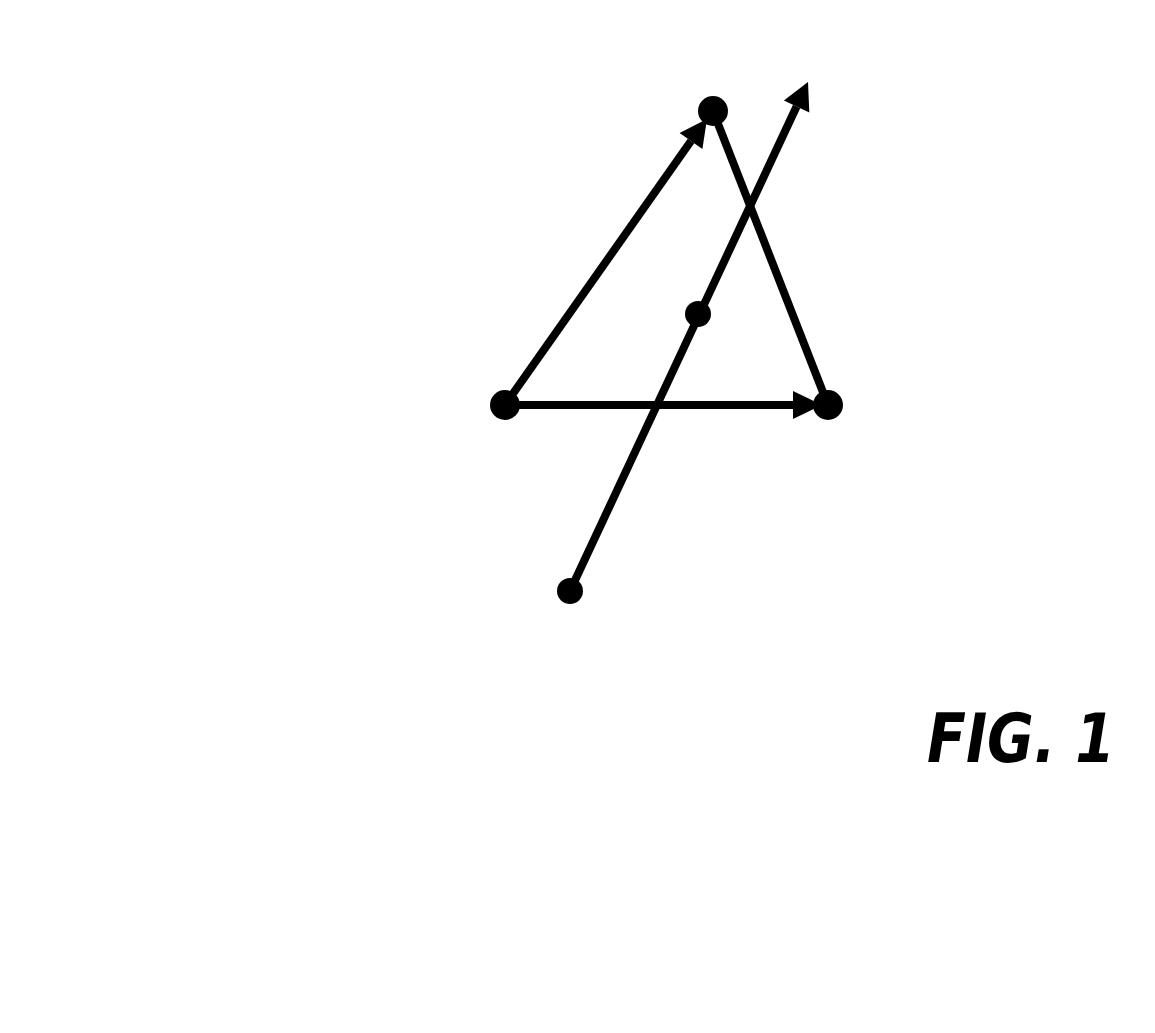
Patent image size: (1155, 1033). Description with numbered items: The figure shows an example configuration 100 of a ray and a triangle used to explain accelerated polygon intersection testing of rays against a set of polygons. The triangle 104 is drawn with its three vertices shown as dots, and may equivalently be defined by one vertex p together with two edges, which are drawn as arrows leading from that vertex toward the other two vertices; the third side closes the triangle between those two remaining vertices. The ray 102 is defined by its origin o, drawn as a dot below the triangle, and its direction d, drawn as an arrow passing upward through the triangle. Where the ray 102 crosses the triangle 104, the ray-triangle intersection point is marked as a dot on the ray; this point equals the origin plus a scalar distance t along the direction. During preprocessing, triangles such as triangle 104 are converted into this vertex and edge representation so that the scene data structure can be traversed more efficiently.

The configuration 100 is at (95, 768).
The ray 102 is at (577, 517).
The triangle 104 is at (588, 247).